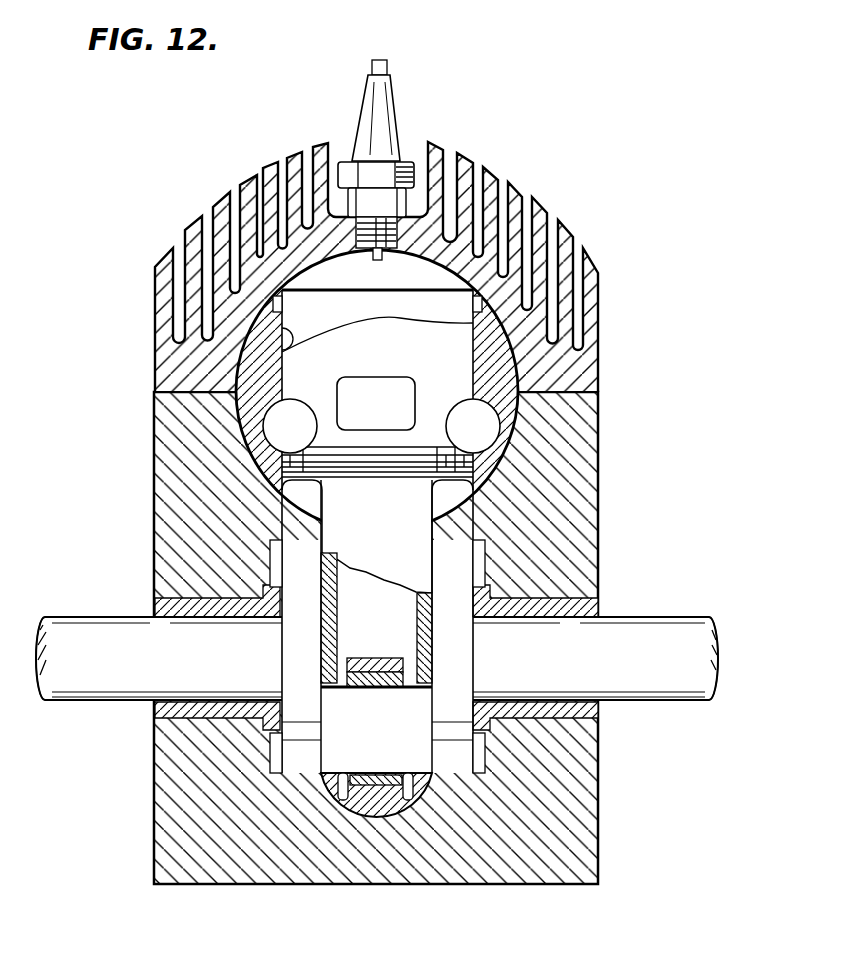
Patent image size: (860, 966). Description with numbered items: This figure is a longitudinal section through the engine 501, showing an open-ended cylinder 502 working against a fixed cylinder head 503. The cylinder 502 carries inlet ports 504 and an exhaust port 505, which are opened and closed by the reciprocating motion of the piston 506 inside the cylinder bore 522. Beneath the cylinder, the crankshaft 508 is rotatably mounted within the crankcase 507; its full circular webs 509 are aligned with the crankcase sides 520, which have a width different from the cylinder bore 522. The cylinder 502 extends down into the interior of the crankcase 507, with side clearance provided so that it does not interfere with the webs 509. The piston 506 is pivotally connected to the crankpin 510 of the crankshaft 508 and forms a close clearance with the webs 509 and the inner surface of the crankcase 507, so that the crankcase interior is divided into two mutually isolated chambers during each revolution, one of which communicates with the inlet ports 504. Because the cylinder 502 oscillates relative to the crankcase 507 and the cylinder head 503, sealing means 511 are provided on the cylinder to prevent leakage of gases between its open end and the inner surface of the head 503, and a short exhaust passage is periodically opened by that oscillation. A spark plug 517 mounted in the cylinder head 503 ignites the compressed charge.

The engine 501 is at (530, 203).
The cylinder 502 is at (513, 362).
The cylinder head 503 is at (596, 334).
The inlet ports 504 is at (463, 418).
The exhaust port 505 is at (407, 389).
The piston 506 is at (407, 503).
The crankcase 507 is at (598, 553).
The crankshaft 508 is at (627, 617).
The crankshaft webs 509 is at (490, 721).
The crankpin 510 is at (360, 800).
The sealing means 511 is at (270, 300).
The spark plug 517 is at (396, 116).
The crankcase sides 520 is at (275, 558).
The cylinder bore 522 is at (282, 352).